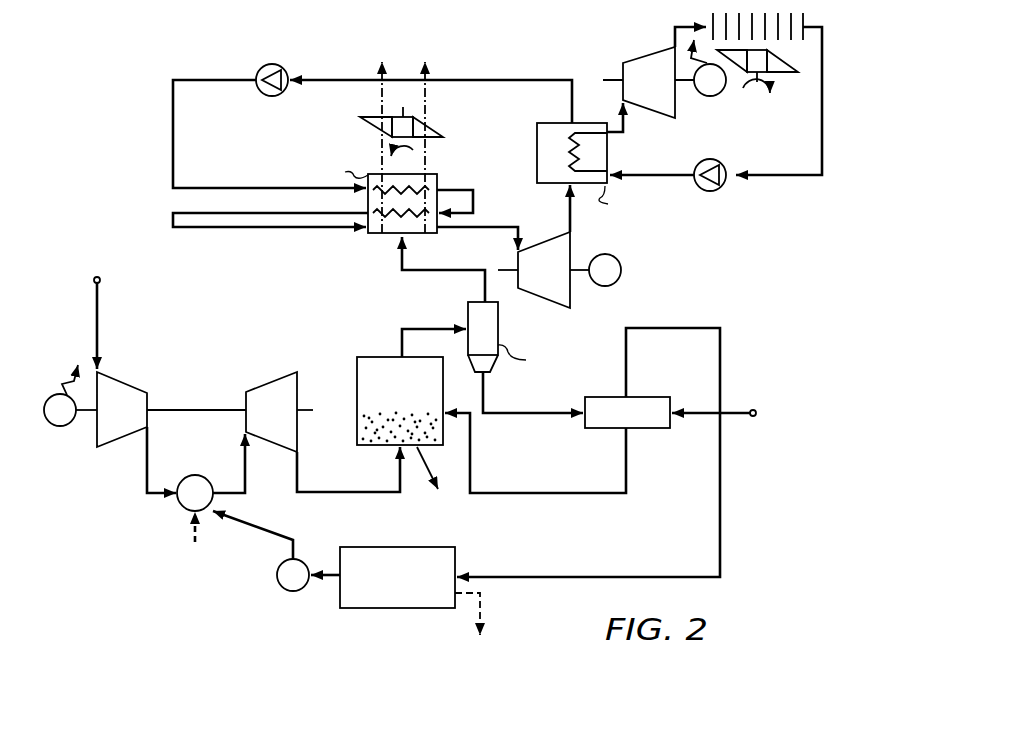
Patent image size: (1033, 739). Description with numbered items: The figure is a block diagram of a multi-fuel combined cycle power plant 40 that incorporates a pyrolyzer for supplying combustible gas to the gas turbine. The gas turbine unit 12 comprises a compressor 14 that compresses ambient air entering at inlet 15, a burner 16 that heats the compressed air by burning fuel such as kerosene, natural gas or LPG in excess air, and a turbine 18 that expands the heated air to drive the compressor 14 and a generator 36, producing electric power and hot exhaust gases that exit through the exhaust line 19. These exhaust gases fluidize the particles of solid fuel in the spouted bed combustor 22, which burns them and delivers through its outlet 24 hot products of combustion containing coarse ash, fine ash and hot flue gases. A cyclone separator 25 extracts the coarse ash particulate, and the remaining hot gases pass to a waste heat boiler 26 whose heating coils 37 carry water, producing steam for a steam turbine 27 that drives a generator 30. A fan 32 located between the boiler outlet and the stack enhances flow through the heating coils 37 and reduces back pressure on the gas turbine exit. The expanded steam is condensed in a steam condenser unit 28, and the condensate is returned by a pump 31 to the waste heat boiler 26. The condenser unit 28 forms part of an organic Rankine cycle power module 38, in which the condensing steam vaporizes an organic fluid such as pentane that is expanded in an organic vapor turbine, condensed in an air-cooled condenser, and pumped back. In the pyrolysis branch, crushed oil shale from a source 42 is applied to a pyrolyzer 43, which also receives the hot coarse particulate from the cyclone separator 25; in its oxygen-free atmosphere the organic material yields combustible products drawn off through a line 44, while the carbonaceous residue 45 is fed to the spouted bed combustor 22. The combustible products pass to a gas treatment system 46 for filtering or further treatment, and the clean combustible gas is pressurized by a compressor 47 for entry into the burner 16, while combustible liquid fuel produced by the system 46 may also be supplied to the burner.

The gas turbine unit 12 is at (203, 383).
The compressor 14 is at (110, 447).
The ambient air inlet 15 is at (99, 312).
The burner 16 is at (200, 475).
The turbine 18 is at (280, 441).
The turbine exhaust line 19 is at (300, 455).
The spouted bed combustor 22 is at (375, 355).
The combustor outlet 24 is at (440, 327).
The cyclone separator 25 is at (498, 326).
The waste heat boiler 26 is at (167, 207).
The steam turbine 27 is at (540, 244).
The steam condenser unit 28 is at (525, 140).
The generator 30 is at (621, 268).
The pump 31 is at (272, 64).
The fan 32 is at (362, 118).
The generator 36 is at (60, 426).
The heating coils 37 is at (425, 178).
The organic Rankine cycle power module 38 is at (782, 139).
The power plant 40 is at (110, 118).
The crushed oil shale source 42 is at (753, 409).
The pyrolyzer 43 is at (652, 397).
The combustible products line 44 is at (720, 342).
The carbonaceous residue 45 is at (358, 418).
The gas treatment system 46 is at (388, 546).
The compressor 47 is at (293, 591).